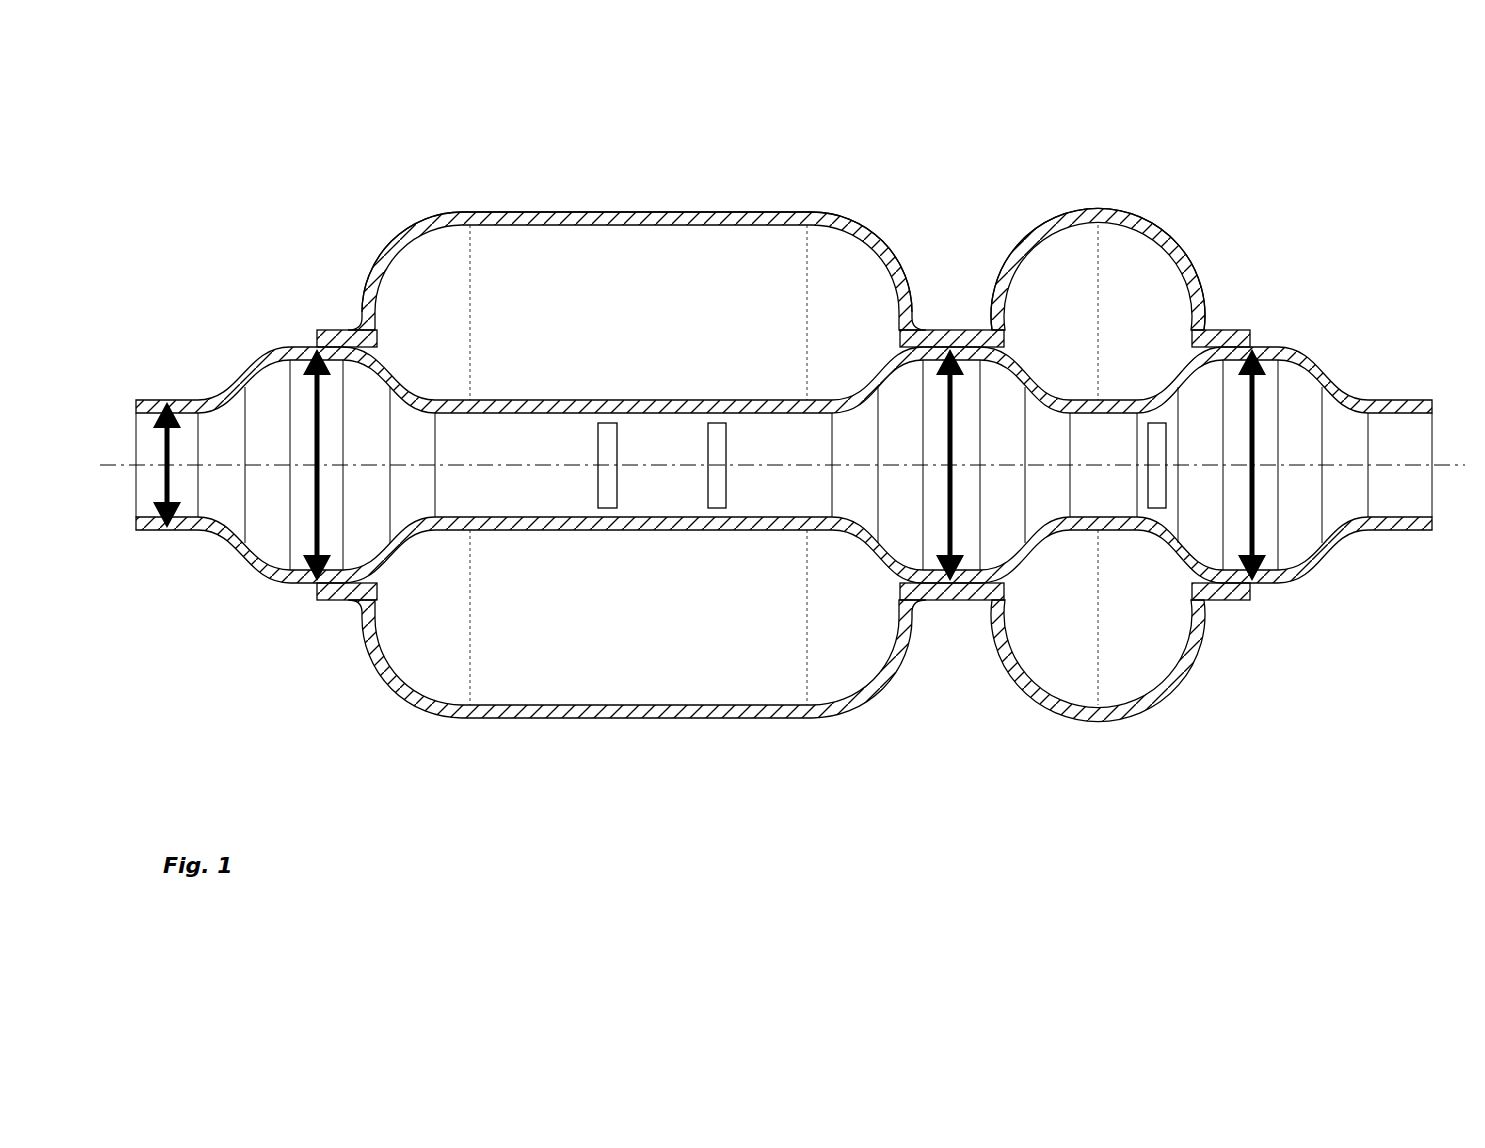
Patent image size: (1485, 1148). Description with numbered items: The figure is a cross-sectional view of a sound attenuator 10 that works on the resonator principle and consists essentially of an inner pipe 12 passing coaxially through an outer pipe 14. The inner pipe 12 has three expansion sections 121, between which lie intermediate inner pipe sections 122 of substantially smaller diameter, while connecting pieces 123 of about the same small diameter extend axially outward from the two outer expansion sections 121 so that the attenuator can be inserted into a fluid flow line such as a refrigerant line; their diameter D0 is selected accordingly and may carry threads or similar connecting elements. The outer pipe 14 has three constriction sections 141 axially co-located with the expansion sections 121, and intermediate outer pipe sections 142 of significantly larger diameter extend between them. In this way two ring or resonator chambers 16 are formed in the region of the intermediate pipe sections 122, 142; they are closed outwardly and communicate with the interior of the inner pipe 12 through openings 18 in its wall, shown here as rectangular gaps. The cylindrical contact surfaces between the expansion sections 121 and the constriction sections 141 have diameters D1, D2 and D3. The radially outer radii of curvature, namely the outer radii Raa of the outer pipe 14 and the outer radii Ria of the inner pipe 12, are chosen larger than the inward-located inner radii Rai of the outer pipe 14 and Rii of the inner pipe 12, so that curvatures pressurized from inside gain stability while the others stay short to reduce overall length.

The sound attenuator 10 is at (1340, 258).
The inner pipe 12 is at (263, 337).
The outer pipe 14 is at (411, 213).
The ring or resonator chamber 16 is at (663, 288).
The wall opening 18 is at (716, 465).
The expansion section 121 is at (333, 601).
The intermediate inner pipe section 122 is at (532, 527).
The connecting piece 123 is at (157, 531).
The constriction section 141 is at (335, 331).
The intermediate outer pipe section 142 is at (627, 220).
The diameter of connecting pieces D0 is at (170, 465).
The diameter of first cylindrical contact surface D1 is at (317, 465).
The diameter of second cylindrical contact surface D2 is at (950, 465).
The diameter of third cylindrical contact surface D3 is at (1250, 465).
The inner radius of outer pipe Rai is at (358, 323).
The outer radius of outer pipe Raa is at (415, 250).
The inner radius of inner pipe Rii is at (411, 390).
The outer radius of inner pipe Ria is at (375, 374).